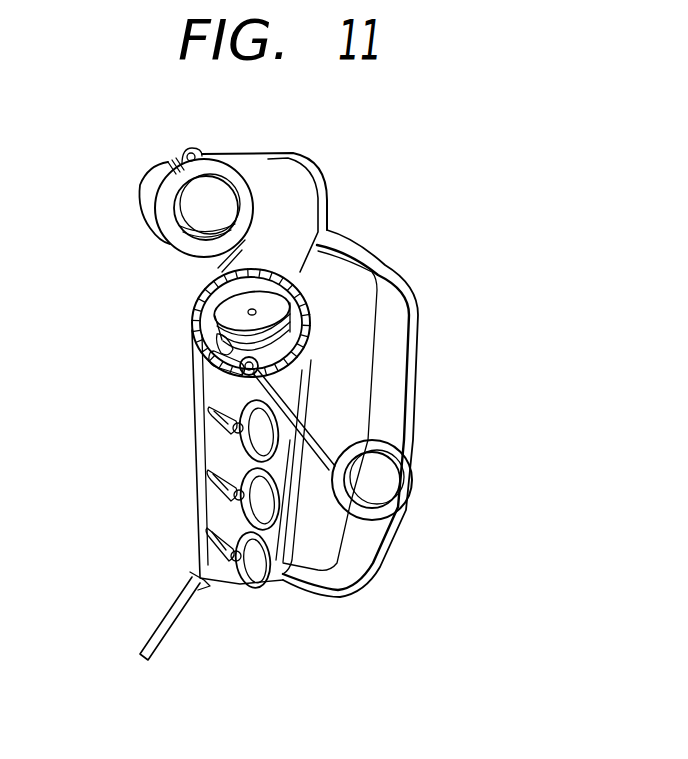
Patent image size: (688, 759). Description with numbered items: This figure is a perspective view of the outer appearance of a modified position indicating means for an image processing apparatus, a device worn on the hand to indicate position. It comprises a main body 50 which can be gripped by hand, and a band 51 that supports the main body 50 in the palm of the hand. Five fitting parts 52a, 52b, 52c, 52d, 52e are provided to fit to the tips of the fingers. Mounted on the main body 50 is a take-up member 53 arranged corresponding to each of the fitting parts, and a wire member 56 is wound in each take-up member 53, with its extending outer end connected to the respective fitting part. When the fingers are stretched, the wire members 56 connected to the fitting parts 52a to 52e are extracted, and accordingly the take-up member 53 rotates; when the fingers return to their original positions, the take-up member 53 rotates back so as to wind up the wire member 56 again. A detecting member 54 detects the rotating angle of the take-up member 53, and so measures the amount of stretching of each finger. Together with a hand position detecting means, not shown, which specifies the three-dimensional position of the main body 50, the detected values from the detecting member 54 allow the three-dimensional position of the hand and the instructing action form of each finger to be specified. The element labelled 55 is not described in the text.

The main body 50 is at (303, 198).
The band 51 is at (366, 250).
The fitting part 52a is at (157, 234).
The fitting part 52b is at (408, 503).
The fitting part 52c is at (240, 443).
The fitting part 52d is at (240, 503).
The fitting part 52e is at (235, 562).
The take-up member 53 is at (225, 313).
The detecting member 54 is at (302, 338).
The cable 55 is at (162, 622).
The wire member 56 is at (296, 405).